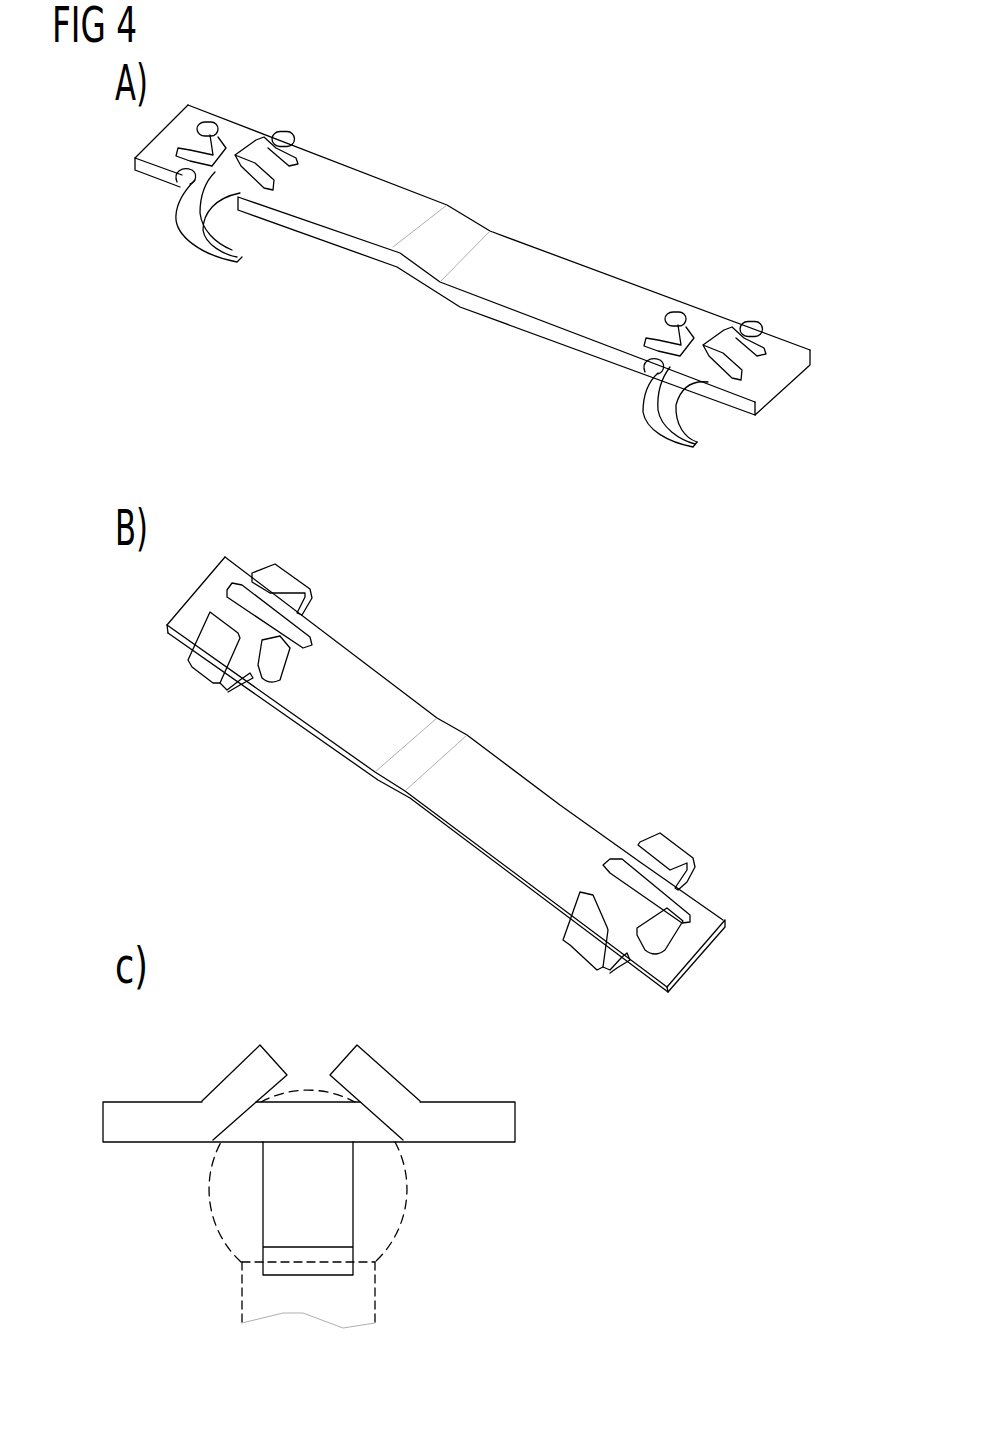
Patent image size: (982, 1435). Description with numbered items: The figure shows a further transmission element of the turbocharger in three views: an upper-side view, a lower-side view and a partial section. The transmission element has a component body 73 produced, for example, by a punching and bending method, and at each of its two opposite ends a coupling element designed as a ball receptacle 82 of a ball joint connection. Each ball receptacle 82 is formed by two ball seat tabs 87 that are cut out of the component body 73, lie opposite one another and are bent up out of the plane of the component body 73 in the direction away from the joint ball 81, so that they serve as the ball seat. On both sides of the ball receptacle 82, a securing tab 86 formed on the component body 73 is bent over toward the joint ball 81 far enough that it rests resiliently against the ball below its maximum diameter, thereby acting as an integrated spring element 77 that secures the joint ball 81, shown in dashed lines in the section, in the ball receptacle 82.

The component body 73 is at (527, 268).
The integrated spring element 77 is at (454, 748).
The securing tab 86 is at (247, 260).
The ball receptacle 82 is at (182, 238).
The ball seat tab 87 is at (228, 133).
The joint ball 81 is at (407, 1215).